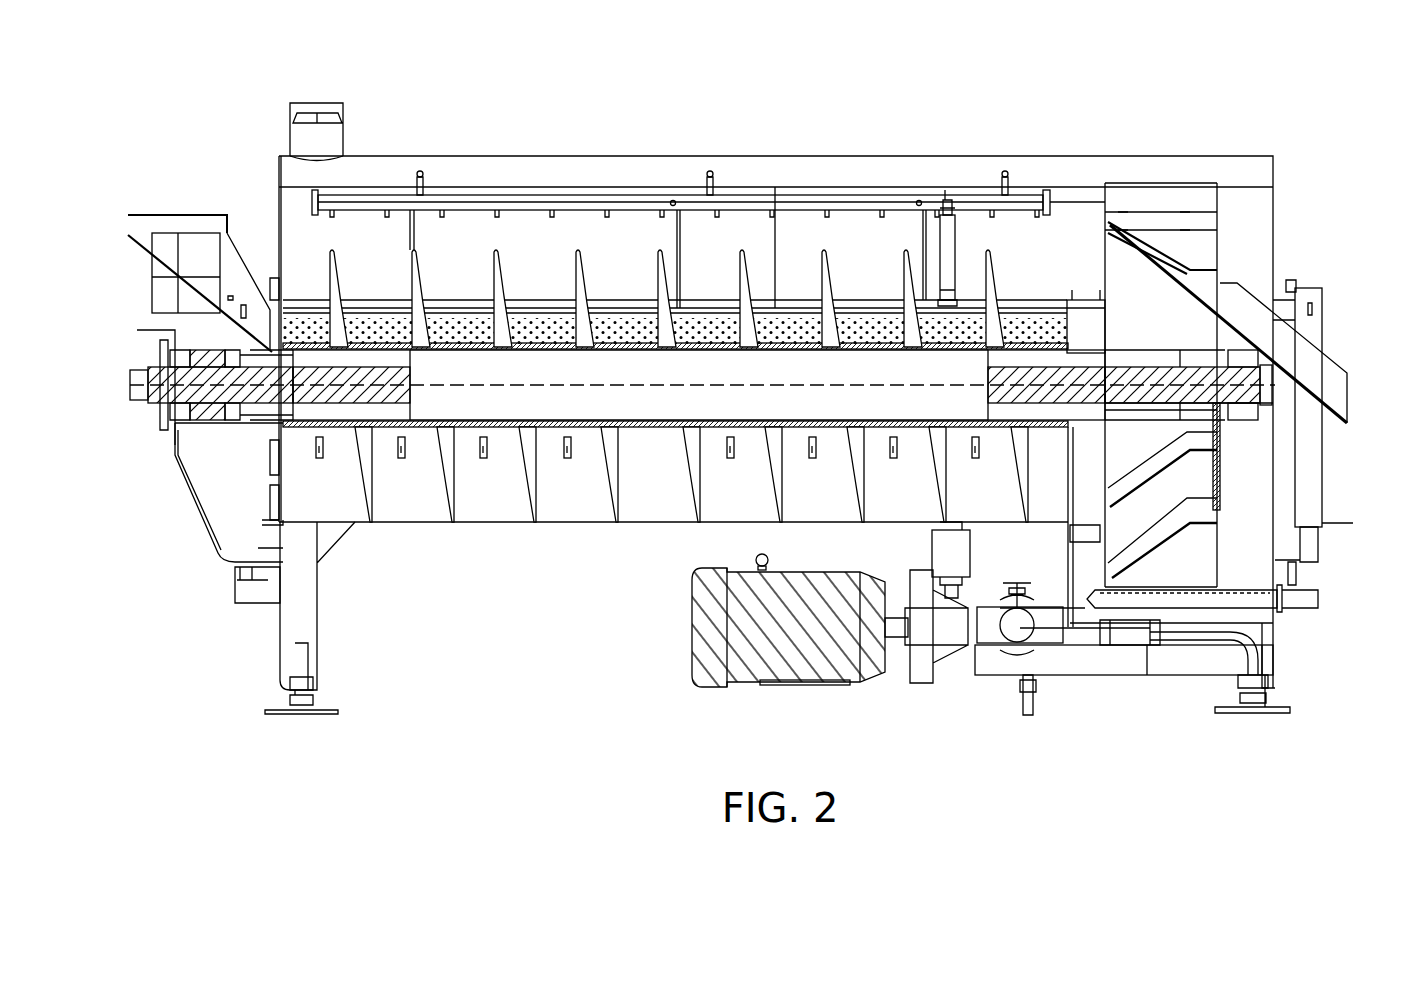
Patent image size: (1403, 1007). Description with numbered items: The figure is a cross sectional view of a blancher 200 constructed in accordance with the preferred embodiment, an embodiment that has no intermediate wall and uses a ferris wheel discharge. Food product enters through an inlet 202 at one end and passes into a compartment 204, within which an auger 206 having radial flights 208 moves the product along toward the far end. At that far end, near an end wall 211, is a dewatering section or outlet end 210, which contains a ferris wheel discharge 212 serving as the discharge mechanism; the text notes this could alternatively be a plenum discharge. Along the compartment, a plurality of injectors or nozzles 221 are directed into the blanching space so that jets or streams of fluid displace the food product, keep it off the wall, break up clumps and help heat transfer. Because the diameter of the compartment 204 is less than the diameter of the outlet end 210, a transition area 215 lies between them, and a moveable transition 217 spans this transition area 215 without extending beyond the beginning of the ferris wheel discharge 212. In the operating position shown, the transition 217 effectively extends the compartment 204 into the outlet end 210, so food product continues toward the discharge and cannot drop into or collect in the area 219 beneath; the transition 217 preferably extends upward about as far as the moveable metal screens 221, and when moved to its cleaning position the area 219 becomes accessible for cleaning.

The blancher 200 is at (518, 668).
The inlet 202 is at (207, 257).
The compartment 204 is at (570, 500).
The auger 206 is at (878, 378).
The radial flights 208 is at (582, 273).
The outlet end 210 is at (1167, 193).
The end wall 211 is at (1275, 206).
The ferris wheel discharge 212 is at (1152, 465).
The transition area 215 is at (1050, 533).
The transition 217 is at (1087, 313).
The area 219 is at (1078, 569).
The injectors 221 is at (958, 315).